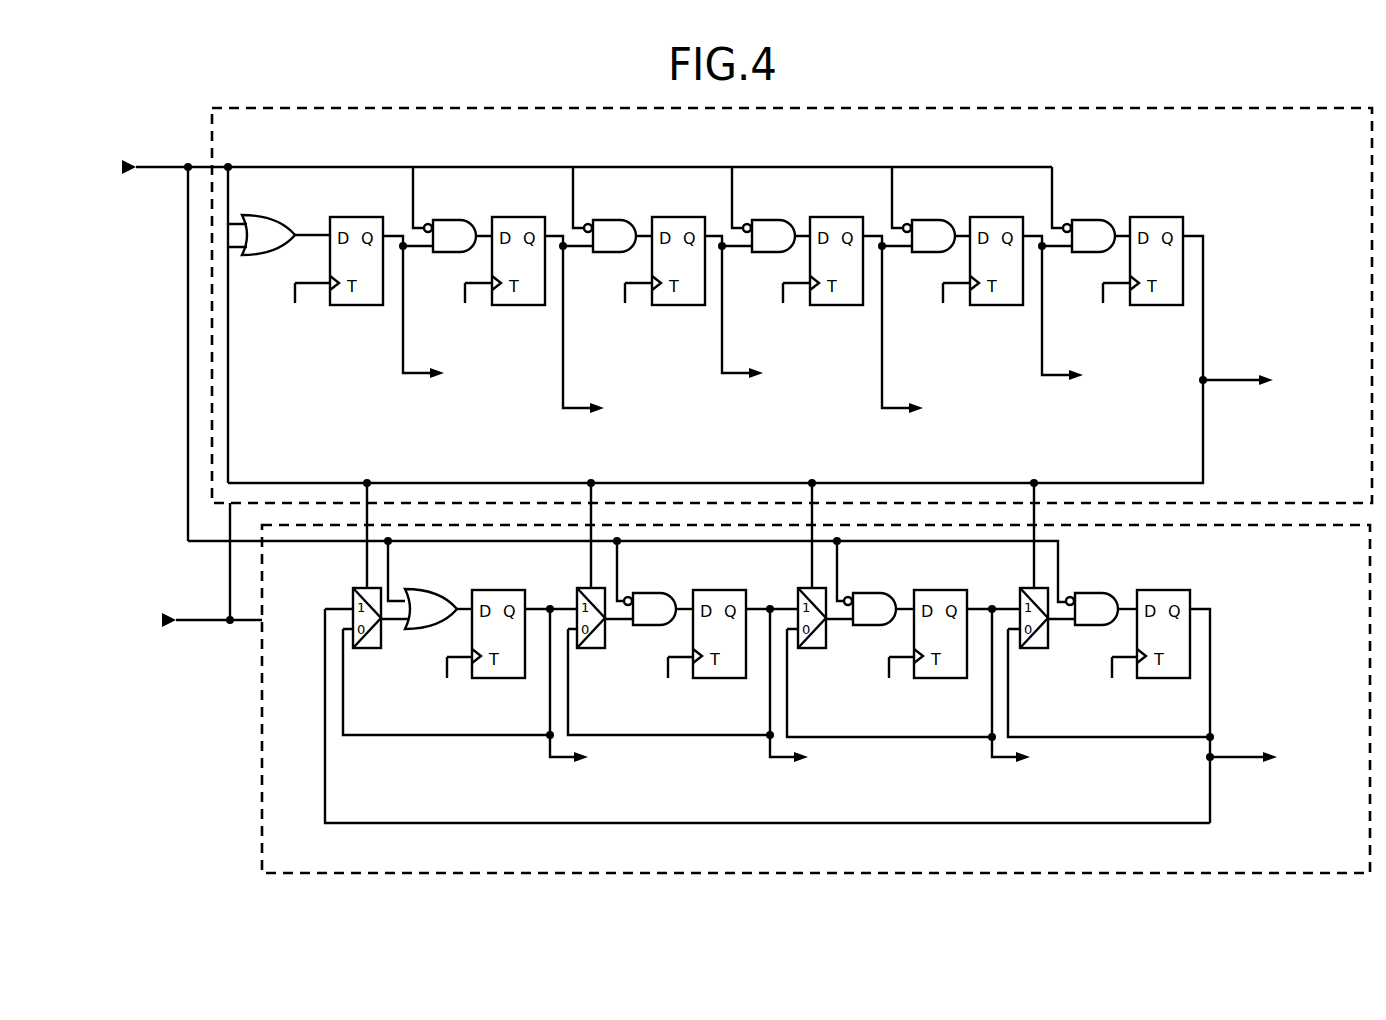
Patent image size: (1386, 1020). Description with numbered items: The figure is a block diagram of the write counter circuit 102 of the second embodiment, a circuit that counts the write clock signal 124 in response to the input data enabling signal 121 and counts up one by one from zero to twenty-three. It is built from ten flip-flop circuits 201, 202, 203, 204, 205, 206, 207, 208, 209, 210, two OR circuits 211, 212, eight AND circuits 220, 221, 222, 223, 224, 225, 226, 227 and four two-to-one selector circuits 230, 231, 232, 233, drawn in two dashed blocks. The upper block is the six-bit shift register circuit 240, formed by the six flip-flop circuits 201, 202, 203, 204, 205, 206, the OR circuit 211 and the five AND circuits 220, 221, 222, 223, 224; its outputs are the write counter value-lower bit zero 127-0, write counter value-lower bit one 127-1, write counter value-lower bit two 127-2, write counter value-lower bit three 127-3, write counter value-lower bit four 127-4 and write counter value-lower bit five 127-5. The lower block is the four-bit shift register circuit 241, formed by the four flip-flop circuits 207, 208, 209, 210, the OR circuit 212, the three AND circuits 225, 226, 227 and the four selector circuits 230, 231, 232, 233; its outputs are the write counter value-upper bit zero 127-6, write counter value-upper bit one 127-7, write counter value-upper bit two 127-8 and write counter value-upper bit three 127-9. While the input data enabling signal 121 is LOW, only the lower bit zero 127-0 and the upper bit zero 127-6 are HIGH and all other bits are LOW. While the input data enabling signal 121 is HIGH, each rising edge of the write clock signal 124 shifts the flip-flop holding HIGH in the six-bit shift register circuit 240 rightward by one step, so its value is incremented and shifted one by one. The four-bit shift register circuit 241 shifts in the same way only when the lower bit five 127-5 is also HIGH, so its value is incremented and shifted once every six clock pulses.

The write counter circuit 102 is at (933, 95).
The 6-bit shift register circuit 240 is at (210, 132).
The 4-bit shift register circuit 241 is at (262, 840).
The input data enabling signal 121 is at (553, 350).
The write clock signal 124 is at (643, 505).
The OR circuit 211 is at (271, 216).
The OR circuit 212 is at (433, 592).
The flip-flop circuit 201 is at (369, 215).
The flip-flop circuit 202 is at (531, 215).
The flip-flop circuit 203 is at (689, 215).
The flip-flop circuit 204 is at (847, 215).
The flip-flop circuit 205 is at (1009, 215).
The flip-flop circuit 206 is at (1169, 217).
The flip-flop circuit 207 is at (496, 585).
The flip-flop circuit 208 is at (719, 586).
The flip-flop circuit 209 is at (939, 586).
The flip-flop circuit 210 is at (1179, 586).
The AND circuit 220 is at (453, 218).
The AND circuit 221 is at (611, 218).
The AND circuit 222 is at (771, 218).
The AND circuit 223 is at (930, 218).
The AND circuit 224 is at (1090, 220).
The AND circuit 225 is at (656, 590).
The AND circuit 226 is at (876, 590).
The AND circuit 227 is at (1098, 590).
The 2-to-1 selector circuit 230 is at (357, 589).
The 2-to-1 selector circuit 231 is at (581, 590).
The 2-to-1 selector circuit 232 is at (803, 590).
The 2-to-1 selector circuit 233 is at (1023, 590).
The write counter value-lower bit [0] 127-0 is at (436, 335).
The write counter value-lower bit [1] 127-1 is at (614, 356).
The write counter value-lower bit [2] 127-2 is at (759, 335).
The write counter value-lower bit [3] 127-3 is at (934, 356).
The write counter value-lower bit [4] 127-4 is at (1074, 335).
The write counter value-lower bit [5] 127-5 is at (791, 431).
The write counter value-upper bit [0] 127-6 is at (566, 709).
The write counter value-upper bit [1] 127-7 is at (814, 709).
The write counter value-upper bit [2] 127-8 is at (1061, 709).
The write counter value-upper bit [3] 127-9 is at (1283, 790).